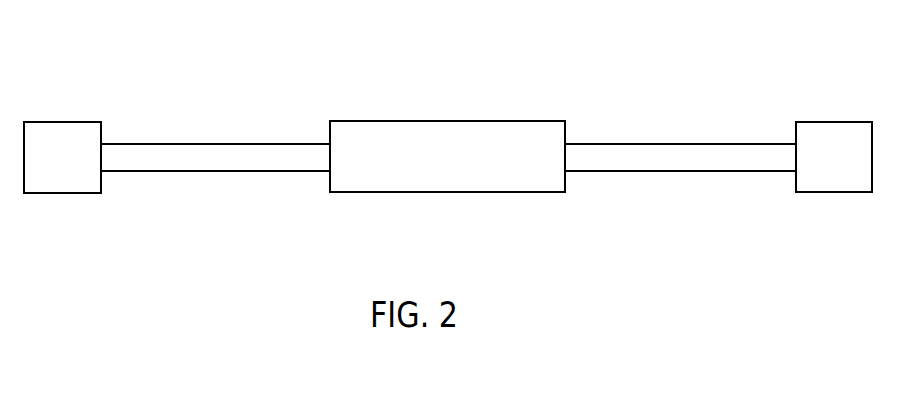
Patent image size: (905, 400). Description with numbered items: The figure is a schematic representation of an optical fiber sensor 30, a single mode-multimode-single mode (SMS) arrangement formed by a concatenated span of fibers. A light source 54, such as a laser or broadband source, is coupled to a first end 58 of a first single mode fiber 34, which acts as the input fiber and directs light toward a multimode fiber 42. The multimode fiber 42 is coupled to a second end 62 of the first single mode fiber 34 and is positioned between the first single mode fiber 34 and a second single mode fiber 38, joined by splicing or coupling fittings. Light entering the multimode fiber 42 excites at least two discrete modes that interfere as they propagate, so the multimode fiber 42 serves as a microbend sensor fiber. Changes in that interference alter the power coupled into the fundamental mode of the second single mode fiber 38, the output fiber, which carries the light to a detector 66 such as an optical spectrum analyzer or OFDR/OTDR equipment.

The optical fiber sensor 30 is at (58, 52).
The light source 54 is at (52, 165).
The multimode fiber 42 is at (443, 138).
The detector 66 is at (824, 166).
The first single mode fiber 34 is at (201, 155).
The first end 58 is at (113, 156).
The second end 62 is at (318, 158).
The second single mode fiber 38 is at (693, 155).